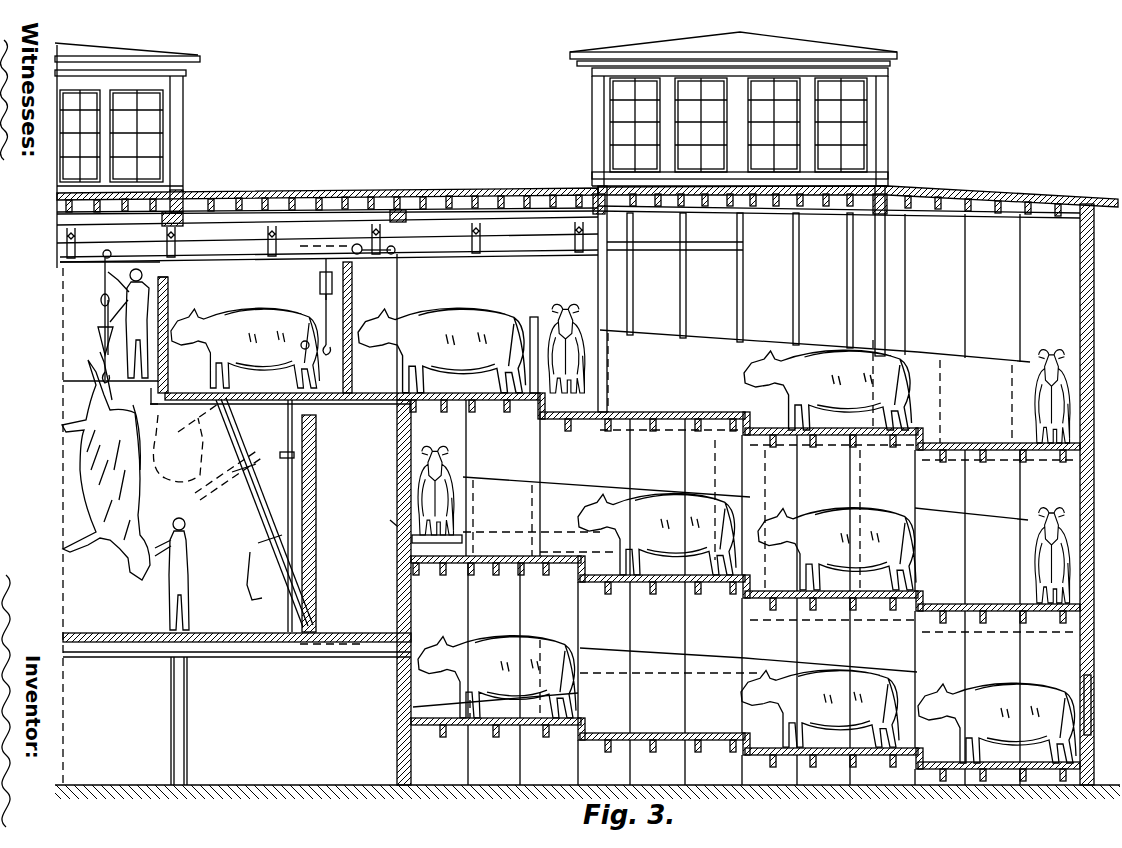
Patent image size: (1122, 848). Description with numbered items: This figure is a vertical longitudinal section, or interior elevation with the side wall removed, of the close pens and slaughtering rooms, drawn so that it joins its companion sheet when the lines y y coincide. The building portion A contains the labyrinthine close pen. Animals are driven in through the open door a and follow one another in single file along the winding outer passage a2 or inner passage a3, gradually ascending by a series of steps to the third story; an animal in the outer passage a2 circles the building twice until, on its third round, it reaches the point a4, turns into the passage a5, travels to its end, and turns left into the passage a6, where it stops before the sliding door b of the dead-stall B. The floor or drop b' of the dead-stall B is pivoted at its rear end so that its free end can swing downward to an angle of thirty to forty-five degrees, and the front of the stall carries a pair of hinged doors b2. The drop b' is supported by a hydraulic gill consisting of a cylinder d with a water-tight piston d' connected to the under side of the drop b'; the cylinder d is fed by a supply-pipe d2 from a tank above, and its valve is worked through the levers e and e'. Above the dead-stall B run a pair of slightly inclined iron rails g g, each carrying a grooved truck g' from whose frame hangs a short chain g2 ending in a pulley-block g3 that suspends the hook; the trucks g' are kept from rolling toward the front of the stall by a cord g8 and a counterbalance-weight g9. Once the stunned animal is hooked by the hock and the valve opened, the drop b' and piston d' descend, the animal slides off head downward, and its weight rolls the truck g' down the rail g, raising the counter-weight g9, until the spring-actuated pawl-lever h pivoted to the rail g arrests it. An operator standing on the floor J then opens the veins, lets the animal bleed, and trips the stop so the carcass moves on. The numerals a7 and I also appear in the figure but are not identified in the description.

The close pen building portion A is at (757, 408).
The open door a is at (1097, 705).
The outer winding passage a2 is at (622, 557).
The inner winding passage a3 is at (757, 516).
The turning point a4 is at (815, 386).
The passage a5 is at (557, 342).
The passage a6 is at (441, 341).
The gate panel a7 is at (720, 582).
The dead-stall B is at (245, 336).
The sliding door b is at (280, 333).
The drop b' is at (235, 331).
The hinged doors b2 is at (170, 286).
The cylinder d is at (266, 515).
The piston d' is at (256, 576).
The supply-pipe d2 is at (320, 578).
The lever e is at (291, 410).
The lever e' is at (280, 458).
The inclined iron rail g is at (329, 250).
The grooved truck g' is at (249, 259).
The short chain g2 is at (99, 319).
The pulley-block g3 is at (98, 353).
The cord g8 is at (407, 327).
The counterbalance-weight g9 is at (387, 523).
The pawl-lever h is at (325, 242).
The upper story wall I is at (809, 299).
The floor J is at (237, 697).
The section line y is at (54, 427).